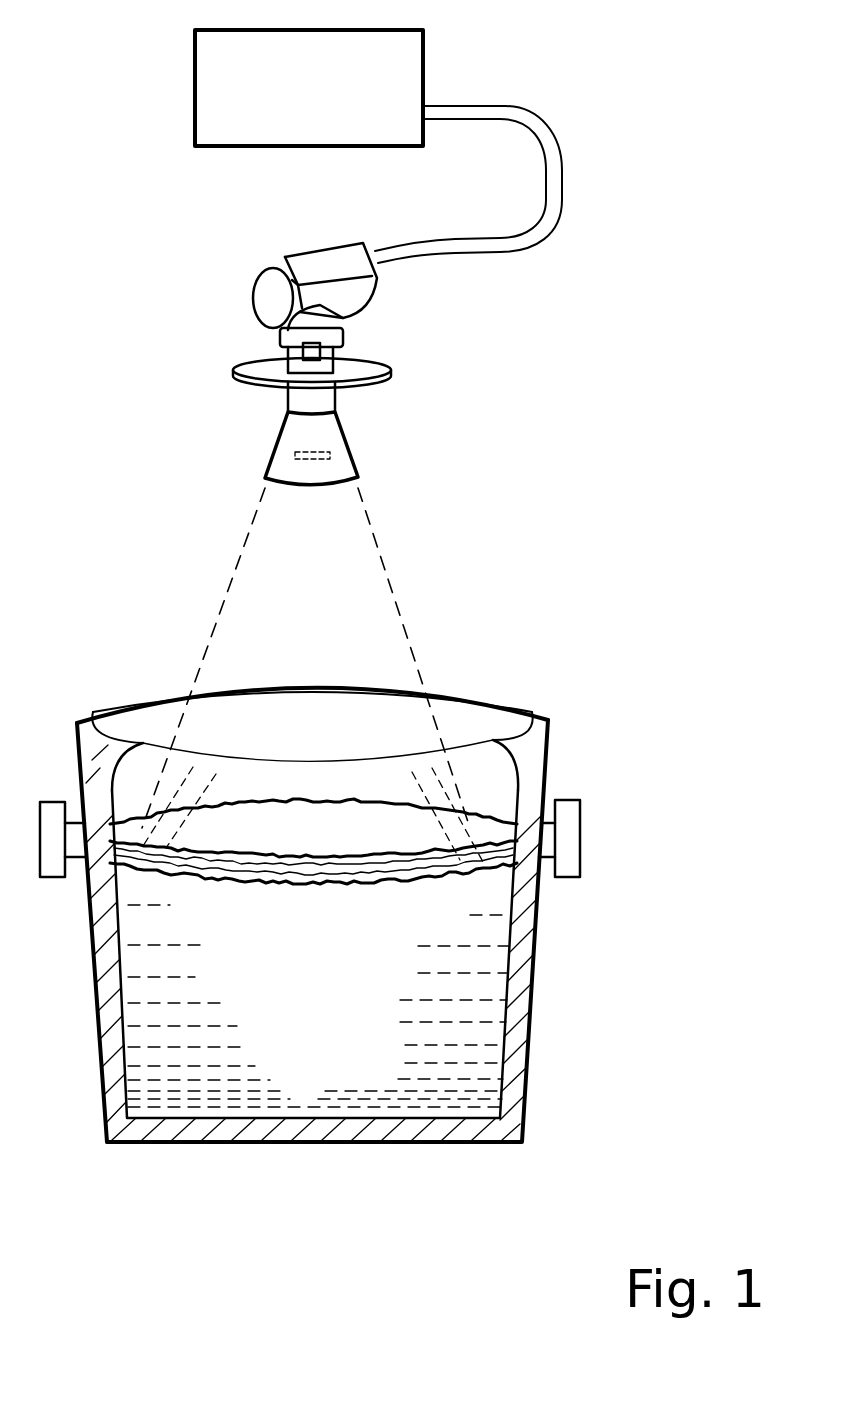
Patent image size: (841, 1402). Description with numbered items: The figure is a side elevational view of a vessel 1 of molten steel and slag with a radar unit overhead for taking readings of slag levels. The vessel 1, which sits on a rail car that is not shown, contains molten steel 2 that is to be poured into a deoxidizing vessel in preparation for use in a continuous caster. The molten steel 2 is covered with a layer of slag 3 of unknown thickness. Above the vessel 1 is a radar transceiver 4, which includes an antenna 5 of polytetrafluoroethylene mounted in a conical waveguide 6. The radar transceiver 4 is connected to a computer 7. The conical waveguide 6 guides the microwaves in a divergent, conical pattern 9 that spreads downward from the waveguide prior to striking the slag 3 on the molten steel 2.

The vessel 1 is at (523, 993).
The molten steel 2 is at (443, 1062).
The slag 3 is at (464, 864).
The radar transceiver 4 is at (258, 280).
The antenna 5 is at (333, 454).
The conical waveguide 6 is at (358, 470).
The computer 7 is at (194, 107).
The conical pattern 9 is at (233, 577).